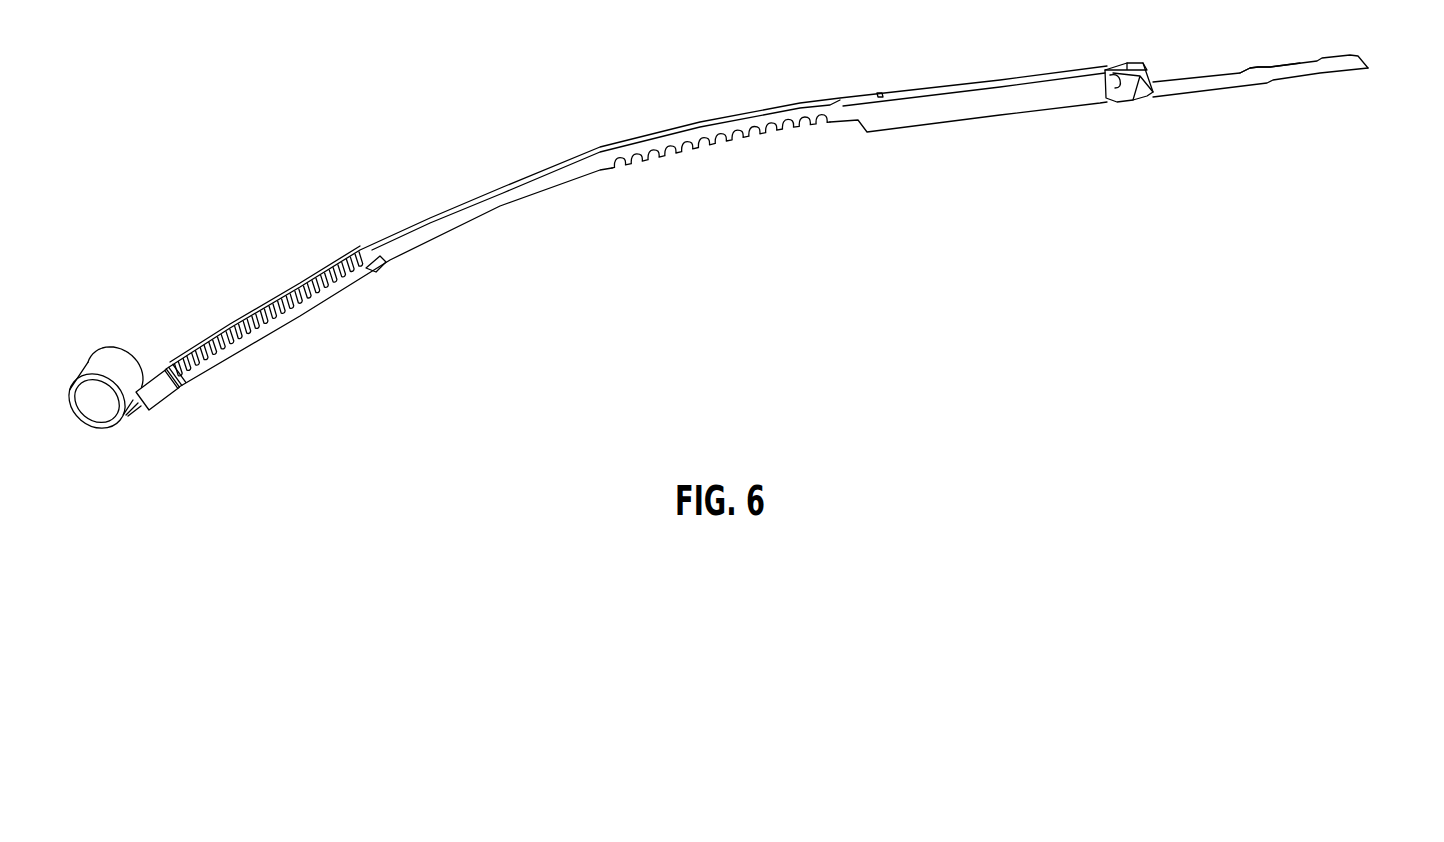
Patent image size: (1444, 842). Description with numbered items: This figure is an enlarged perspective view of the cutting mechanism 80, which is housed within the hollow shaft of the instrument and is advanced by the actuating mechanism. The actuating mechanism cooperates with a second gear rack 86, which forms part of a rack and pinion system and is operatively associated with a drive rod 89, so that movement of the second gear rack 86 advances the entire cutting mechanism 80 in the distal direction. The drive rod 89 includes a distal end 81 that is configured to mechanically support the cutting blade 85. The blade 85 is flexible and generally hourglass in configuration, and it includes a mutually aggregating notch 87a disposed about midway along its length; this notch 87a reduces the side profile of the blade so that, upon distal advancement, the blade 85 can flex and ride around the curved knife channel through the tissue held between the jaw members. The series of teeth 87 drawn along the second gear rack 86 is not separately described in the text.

The cutting mechanism 80 is at (741, 151).
The distal end 81 is at (1117, 92).
The cutting blade 85 is at (1353, 67).
The second gear rack 86 is at (268, 320).
The ratchet teeth 87 is at (352, 215).
The mutually aggregating notch 87a is at (1292, 62).
The drive rod 89 is at (503, 195).